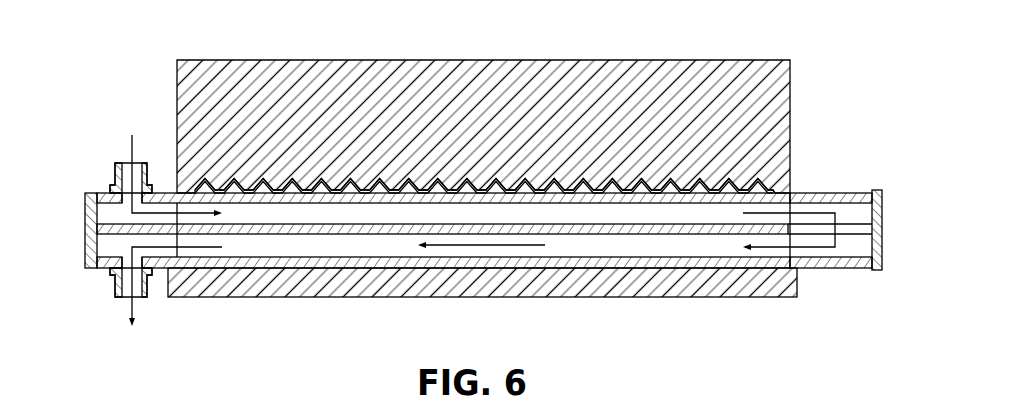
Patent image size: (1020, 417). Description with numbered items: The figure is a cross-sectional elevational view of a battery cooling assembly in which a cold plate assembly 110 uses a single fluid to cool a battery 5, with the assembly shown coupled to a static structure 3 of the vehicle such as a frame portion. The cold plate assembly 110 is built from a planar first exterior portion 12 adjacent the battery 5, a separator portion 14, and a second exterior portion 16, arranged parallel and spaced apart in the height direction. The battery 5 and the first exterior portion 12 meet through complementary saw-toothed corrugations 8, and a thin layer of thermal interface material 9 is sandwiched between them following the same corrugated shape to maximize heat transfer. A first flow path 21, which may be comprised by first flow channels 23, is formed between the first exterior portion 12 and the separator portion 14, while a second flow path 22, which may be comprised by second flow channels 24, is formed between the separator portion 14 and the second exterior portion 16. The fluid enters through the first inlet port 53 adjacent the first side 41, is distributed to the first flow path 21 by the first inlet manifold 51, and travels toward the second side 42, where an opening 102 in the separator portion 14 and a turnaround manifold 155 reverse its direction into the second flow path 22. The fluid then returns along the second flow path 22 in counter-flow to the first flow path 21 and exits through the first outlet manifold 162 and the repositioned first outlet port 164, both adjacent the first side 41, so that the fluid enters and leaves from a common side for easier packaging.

The static structure 3 is at (427, 292).
The battery 5 is at (468, 80).
The corrugations 8 is at (278, 180).
The thermal interface material 9 is at (313, 185).
The first exterior portion 12 is at (873, 197).
The separator portion 14 is at (906, 230).
The second exterior portion 16 is at (873, 267).
The first flow path 21 is at (443, 121).
The second flow path 22 is at (443, 296).
The first flow channels 23 is at (401, 222).
The second flow channels 24 is at (342, 248).
The first side 41 is at (85, 240).
The second side 42 is at (877, 232).
The first inlet manifold 51 is at (112, 213).
The first inlet port 53 is at (123, 165).
The opening 102 is at (848, 232).
The cold plate assembly 110 is at (82, 192).
The turnaround manifold 155 is at (845, 213).
The first outlet manifold 162 is at (105, 247).
The first outlet port 164 is at (123, 297).